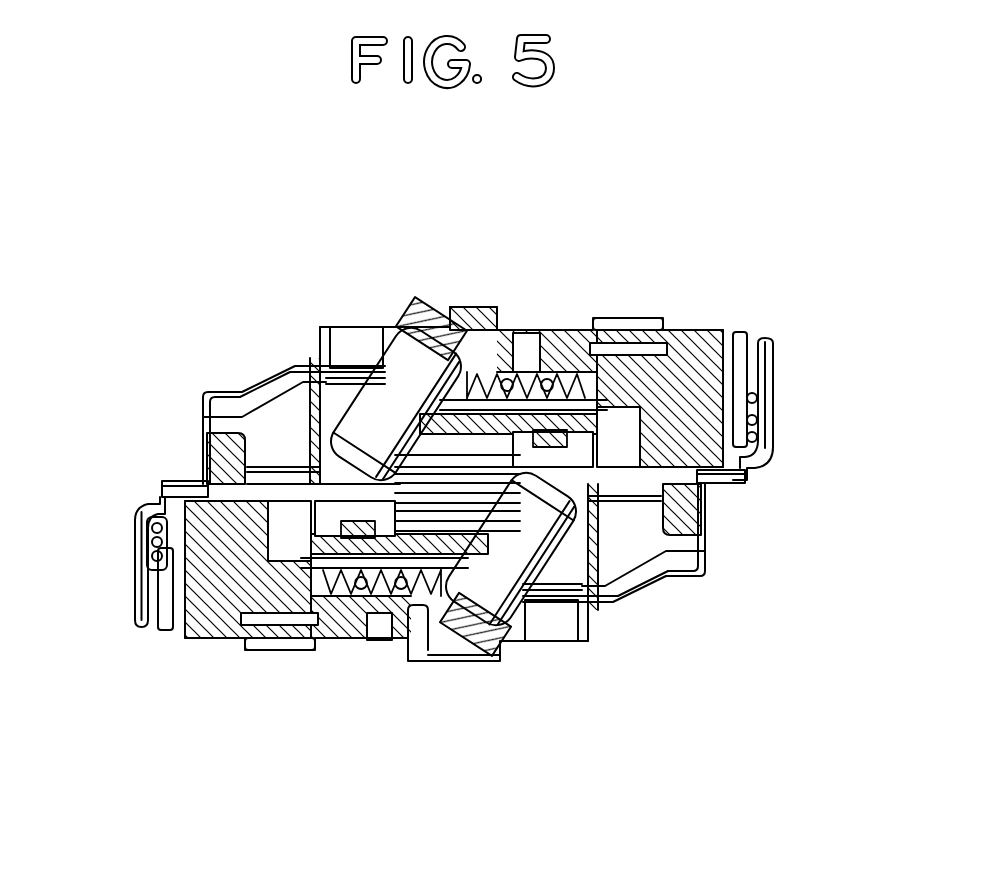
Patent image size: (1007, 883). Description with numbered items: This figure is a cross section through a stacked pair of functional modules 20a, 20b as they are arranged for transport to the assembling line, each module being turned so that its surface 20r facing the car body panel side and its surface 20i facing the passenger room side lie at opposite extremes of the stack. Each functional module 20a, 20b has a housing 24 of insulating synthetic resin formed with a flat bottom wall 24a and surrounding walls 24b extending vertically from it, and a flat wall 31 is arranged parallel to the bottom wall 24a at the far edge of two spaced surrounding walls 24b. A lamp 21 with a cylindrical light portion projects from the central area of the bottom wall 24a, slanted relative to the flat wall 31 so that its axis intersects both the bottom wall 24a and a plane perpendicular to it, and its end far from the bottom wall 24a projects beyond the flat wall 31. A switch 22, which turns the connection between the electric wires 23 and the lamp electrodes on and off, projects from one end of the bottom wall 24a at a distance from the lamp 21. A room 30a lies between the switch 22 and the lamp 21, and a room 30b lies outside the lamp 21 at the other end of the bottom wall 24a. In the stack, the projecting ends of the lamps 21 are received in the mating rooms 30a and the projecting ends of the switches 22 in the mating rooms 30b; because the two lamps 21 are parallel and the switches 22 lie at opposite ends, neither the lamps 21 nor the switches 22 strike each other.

The surface at the car body panel side 20r is at (328, 310).
The other functional module 20b is at (533, 308).
The functional module 20a is at (476, 675).
The surface at the passenger room side 20i is at (169, 468).
The lamp 21 is at (377, 407).
The switch 22 is at (688, 335).
The electric wires 23 is at (770, 416).
The housing 24 is at (465, 302).
The bottom wall 24a is at (557, 435).
The surrounding walls 24b is at (770, 378).
The room for protecting electric components 30a is at (572, 487).
The room for protecting electric components 30b is at (283, 419).
The flat wall 31 is at (638, 333).